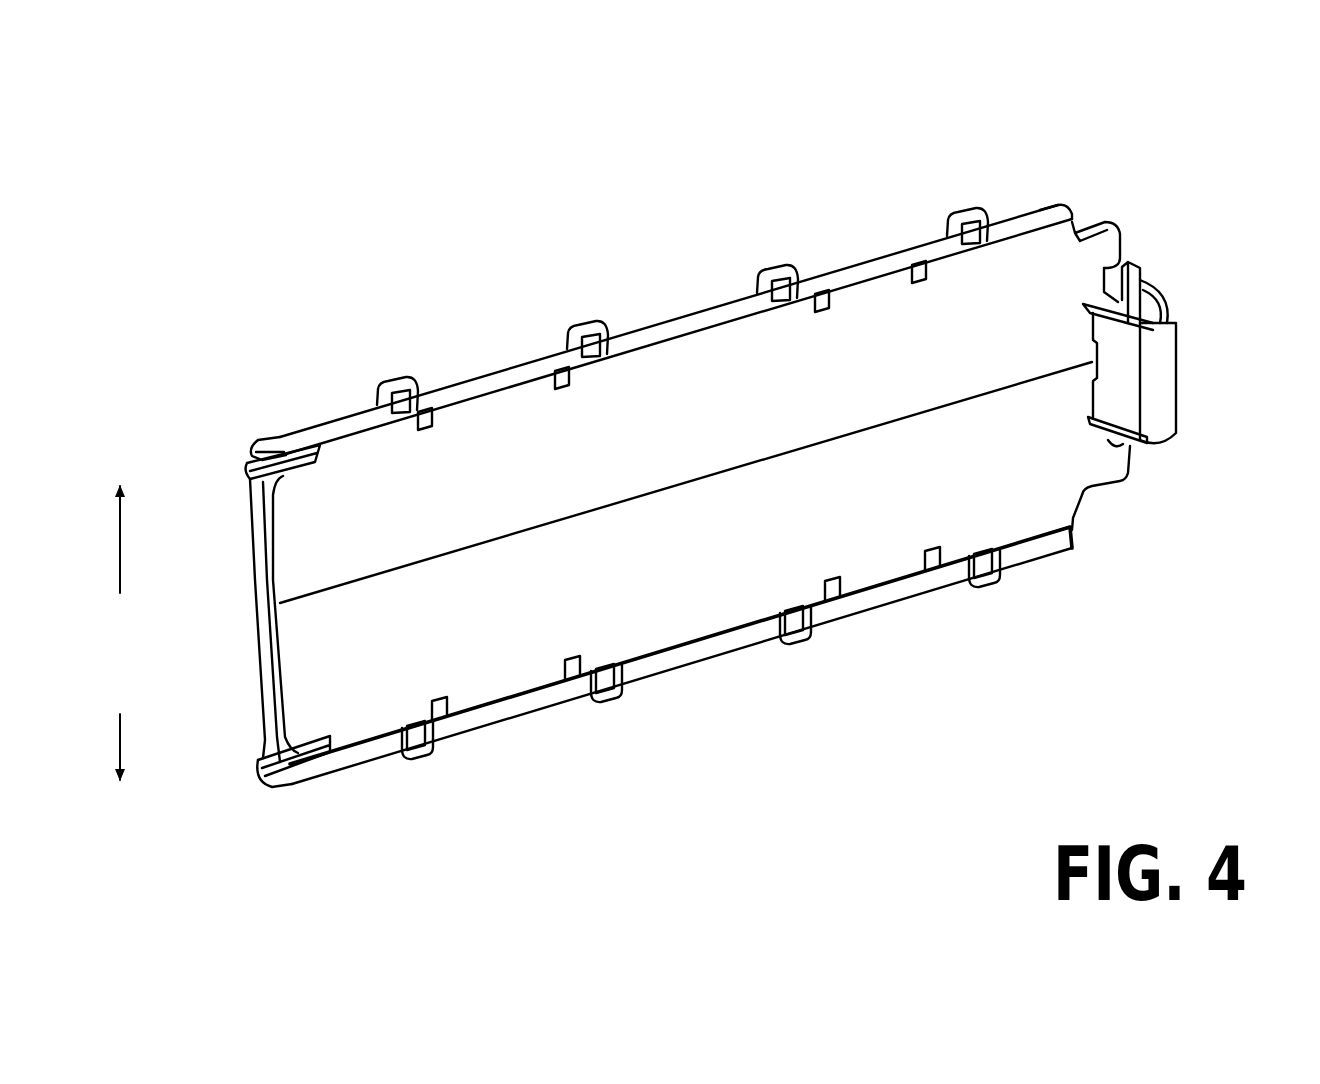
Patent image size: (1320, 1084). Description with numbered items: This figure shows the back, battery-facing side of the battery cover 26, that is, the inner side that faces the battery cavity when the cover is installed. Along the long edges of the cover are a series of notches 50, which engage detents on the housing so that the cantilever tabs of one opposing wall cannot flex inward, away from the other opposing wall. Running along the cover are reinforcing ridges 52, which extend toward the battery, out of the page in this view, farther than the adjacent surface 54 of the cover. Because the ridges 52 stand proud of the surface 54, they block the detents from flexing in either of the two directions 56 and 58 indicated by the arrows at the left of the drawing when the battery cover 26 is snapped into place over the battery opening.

The battery cover 26 is at (1207, 293).
The notches 50 is at (550, 397).
The reinforcing ridges 52 is at (1062, 207).
The surface 54 is at (300, 537).
The direction 56 is at (121, 554).
The direction 58 is at (121, 733).